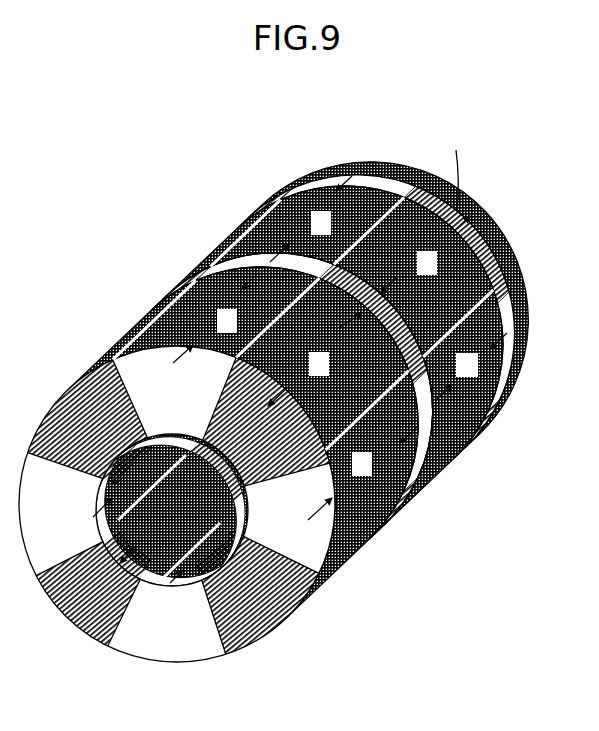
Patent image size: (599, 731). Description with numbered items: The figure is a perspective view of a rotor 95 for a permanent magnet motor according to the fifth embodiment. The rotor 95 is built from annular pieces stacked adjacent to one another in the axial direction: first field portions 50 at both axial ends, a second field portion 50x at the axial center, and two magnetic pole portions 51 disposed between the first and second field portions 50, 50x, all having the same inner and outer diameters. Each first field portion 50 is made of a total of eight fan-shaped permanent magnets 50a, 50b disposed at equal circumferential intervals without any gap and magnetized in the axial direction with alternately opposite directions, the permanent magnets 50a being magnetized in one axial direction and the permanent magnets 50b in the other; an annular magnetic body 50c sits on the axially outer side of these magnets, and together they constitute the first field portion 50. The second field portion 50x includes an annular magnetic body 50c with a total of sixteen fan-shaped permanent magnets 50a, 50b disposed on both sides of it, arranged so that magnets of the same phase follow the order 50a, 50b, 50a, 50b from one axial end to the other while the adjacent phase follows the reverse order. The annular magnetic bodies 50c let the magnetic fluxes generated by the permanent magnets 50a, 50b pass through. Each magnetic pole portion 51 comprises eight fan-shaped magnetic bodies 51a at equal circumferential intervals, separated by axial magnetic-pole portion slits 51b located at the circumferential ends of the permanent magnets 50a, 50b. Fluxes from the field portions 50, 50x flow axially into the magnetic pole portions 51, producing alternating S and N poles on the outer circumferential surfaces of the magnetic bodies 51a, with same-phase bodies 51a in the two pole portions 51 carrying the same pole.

The rotor 95 is at (300, 395).
The first field portion 50 is at (278, 190).
The second field portion 50x is at (312, 355).
The permanent magnet 50a is at (78, 618).
The permanent magnet 50b is at (164, 640).
The annular magnetic body 50c is at (410, 490).
The magnetic pole portion 51 is at (298, 357).
The magnetic body 51a is at (462, 405).
The magnetic-pole portion slit 51b is at (363, 527).